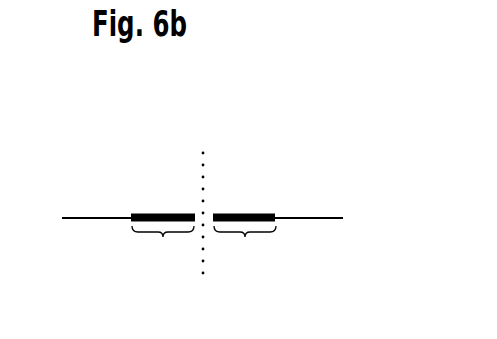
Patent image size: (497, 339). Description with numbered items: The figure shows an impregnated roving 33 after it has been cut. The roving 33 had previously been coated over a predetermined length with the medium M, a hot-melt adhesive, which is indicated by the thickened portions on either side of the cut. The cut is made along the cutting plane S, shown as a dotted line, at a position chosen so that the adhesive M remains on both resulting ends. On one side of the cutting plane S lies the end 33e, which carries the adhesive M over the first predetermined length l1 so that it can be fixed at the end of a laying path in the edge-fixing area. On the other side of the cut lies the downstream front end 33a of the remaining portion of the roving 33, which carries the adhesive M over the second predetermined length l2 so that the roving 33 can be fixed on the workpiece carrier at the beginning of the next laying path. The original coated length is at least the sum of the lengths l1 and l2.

The roving 33 is at (88, 218).
The end 33e is at (165, 213).
The downstream front end of the remaining portion of the roving 33a is at (233, 213).
The medium M is at (149, 212).
The cutting plane S is at (204, 165).
The first predetermined length l1 is at (163, 251).
The second predetermined length l2 is at (245, 251).